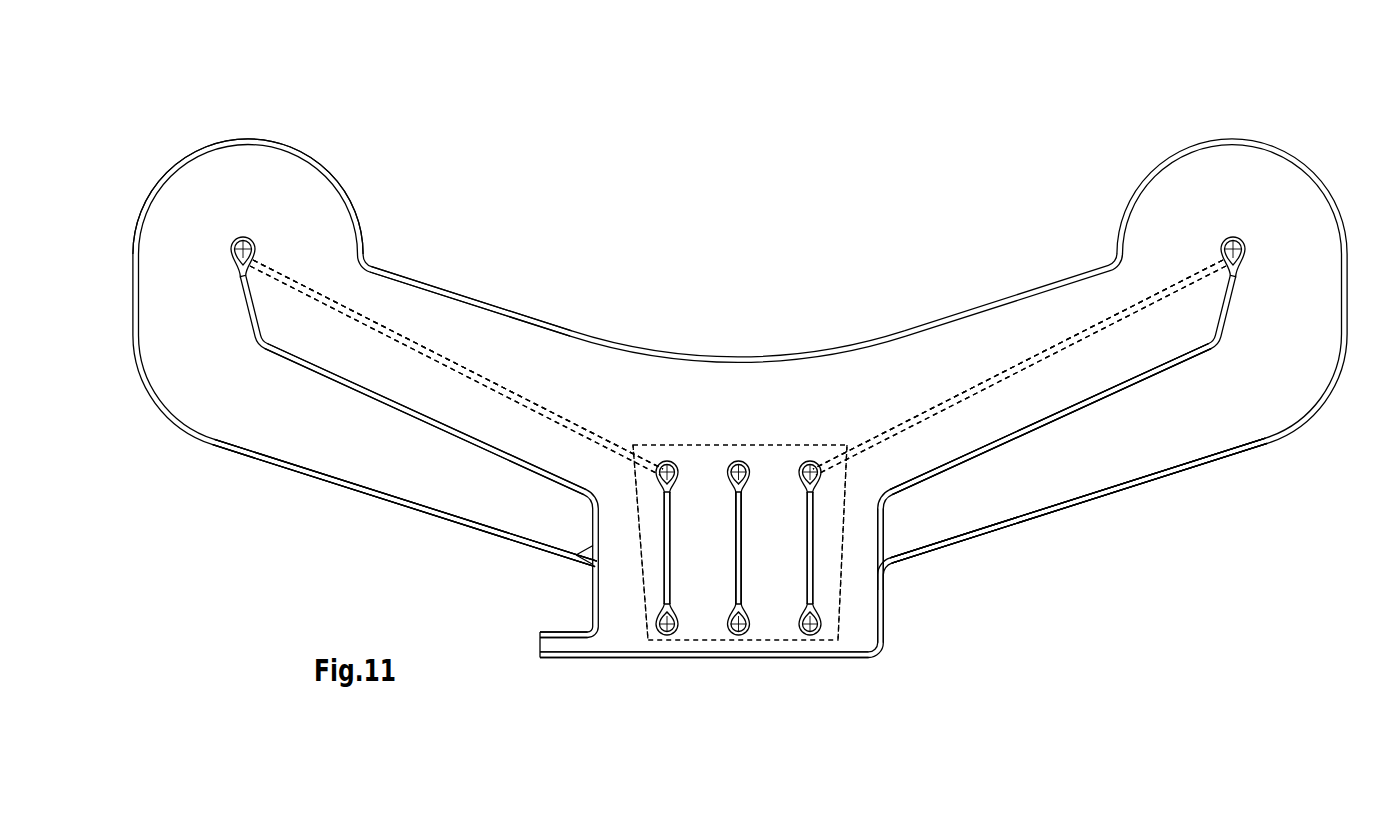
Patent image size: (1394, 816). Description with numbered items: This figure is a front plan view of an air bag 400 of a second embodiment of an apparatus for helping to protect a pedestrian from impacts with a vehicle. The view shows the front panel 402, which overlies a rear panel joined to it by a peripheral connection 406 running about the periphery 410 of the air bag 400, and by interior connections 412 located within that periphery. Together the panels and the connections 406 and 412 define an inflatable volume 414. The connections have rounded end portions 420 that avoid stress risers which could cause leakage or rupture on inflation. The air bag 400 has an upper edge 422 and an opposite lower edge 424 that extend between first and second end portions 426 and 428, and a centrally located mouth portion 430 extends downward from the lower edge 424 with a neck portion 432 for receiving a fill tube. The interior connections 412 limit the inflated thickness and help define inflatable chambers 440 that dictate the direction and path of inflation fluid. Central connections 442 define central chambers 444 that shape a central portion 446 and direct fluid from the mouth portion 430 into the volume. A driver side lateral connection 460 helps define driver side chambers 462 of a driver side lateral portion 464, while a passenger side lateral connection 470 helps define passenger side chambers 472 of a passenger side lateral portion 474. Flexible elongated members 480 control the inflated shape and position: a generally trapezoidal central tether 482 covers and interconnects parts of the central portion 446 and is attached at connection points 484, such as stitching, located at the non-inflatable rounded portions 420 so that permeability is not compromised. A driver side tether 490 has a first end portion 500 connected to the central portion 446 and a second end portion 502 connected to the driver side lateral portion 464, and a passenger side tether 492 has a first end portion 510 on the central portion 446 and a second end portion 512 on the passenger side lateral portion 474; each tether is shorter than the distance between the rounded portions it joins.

The air bag 400 is at (157, 116).
The front panel 402 is at (210, 352).
The peripheral connection 406 is at (470, 295).
The periphery 410 is at (598, 336).
The interior connections 412 is at (383, 402).
The inflatable volume 414 is at (960, 497).
The end portions 420 is at (250, 243).
The upper edge 422 is at (893, 335).
The lower edge 424 is at (910, 563).
The first end portion 426 is at (1300, 270).
The second end portion 428 is at (190, 248).
The mouth portion 430 is at (850, 642).
The neck portion 432 is at (567, 650).
The inflatable chambers 440 is at (315, 408).
The central connections 442 is at (738, 627).
The central chambers 444 is at (634, 558).
The central portion 446 is at (600, 560).
The driver side lateral connection 460 is at (1055, 443).
The driver side chambers 462 is at (1102, 500).
The driver side lateral portion 464 is at (1023, 400).
The passenger side lateral connection 470 is at (425, 449).
The passenger side chambers 472 is at (405, 502).
The passenger side lateral portion 474 is at (380, 290).
The flexible elongated members 480 is at (490, 377).
The central tether 482 is at (922, 554).
The connection points 484 is at (243, 243).
The driver side tether 490 is at (1019, 420).
The passenger side tether 492 is at (456, 367).
The first end portion 500 is at (836, 465).
The second end portion 502 is at (1240, 255).
The first end portion 510 is at (648, 515).
The second end portion 512 is at (290, 250).